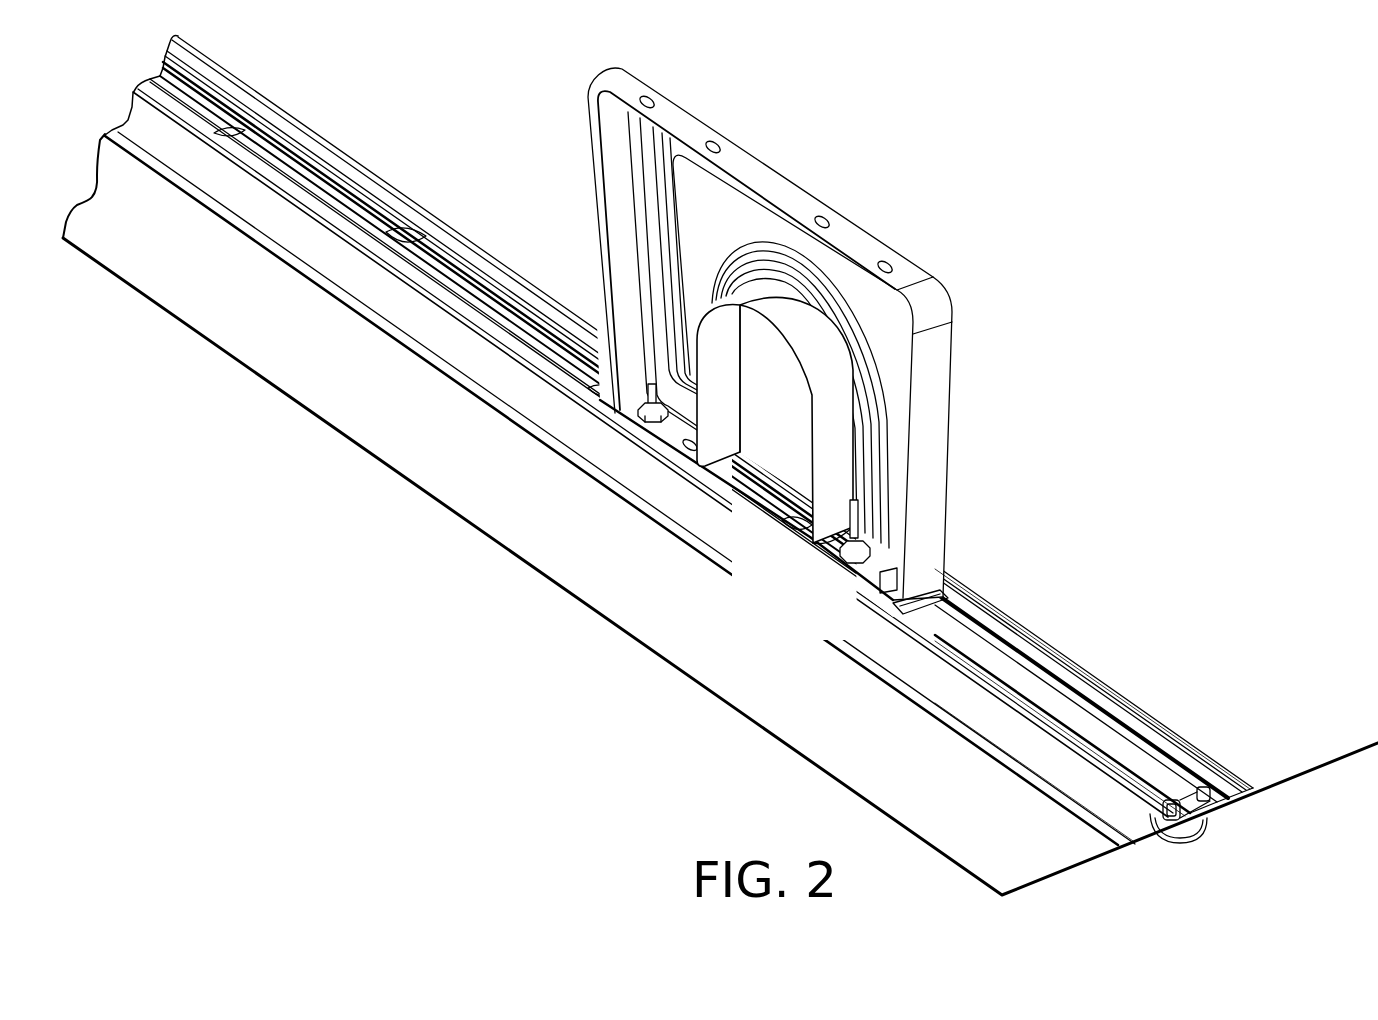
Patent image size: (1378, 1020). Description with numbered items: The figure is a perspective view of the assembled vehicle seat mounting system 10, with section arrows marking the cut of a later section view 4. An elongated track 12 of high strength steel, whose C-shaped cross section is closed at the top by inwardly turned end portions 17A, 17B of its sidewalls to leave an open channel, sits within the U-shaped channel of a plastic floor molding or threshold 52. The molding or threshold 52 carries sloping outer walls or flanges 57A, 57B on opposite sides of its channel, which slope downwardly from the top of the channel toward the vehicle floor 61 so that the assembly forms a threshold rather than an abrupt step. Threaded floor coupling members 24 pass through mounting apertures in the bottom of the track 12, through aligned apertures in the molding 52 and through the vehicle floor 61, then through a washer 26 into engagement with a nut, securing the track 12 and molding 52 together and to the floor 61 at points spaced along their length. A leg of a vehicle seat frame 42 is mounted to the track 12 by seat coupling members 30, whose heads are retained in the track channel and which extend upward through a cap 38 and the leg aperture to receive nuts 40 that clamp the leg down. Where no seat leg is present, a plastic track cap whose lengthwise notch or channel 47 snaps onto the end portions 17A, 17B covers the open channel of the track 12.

The vehicle seat mounting system 10 is at (1152, 678).
The elongated track 12 is at (1213, 803).
The end portion of sidewall 17A is at (1170, 803).
The end portion of sidewall 17B is at (1212, 788).
The floor coupling member 24 is at (382, 222).
The washer 26 is at (1208, 835).
The seat coupling member 30 is at (652, 395).
The cap 38 is at (675, 470).
The nut 40 is at (842, 588).
The seat frame 42 is at (945, 395).
The notch or channel of track cap 47 is at (960, 622).
The floor molding or threshold 52 is at (1049, 767).
The sloping outer wall or flange 57A is at (962, 700).
The sloping outer wall or flange 57B is at (1073, 657).
The vehicle floor 61 is at (266, 350).
The section line 4- 4 is at (790, 710).